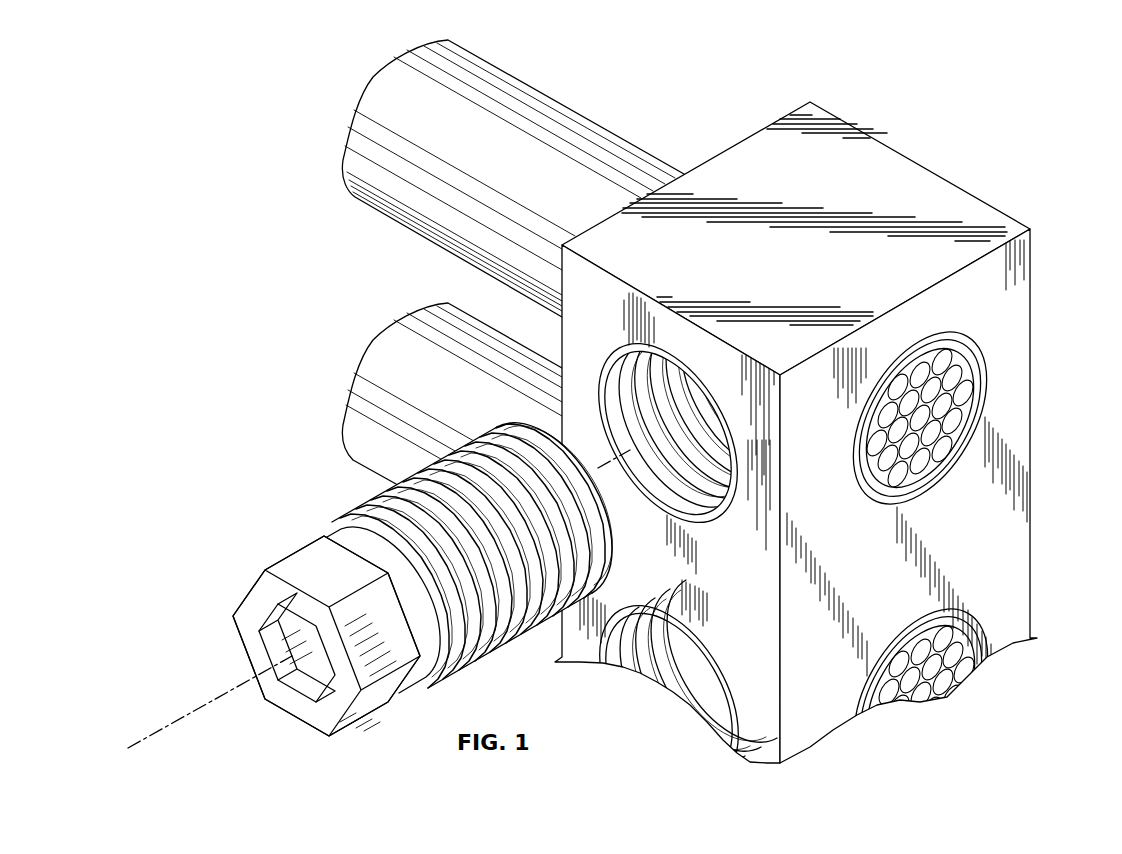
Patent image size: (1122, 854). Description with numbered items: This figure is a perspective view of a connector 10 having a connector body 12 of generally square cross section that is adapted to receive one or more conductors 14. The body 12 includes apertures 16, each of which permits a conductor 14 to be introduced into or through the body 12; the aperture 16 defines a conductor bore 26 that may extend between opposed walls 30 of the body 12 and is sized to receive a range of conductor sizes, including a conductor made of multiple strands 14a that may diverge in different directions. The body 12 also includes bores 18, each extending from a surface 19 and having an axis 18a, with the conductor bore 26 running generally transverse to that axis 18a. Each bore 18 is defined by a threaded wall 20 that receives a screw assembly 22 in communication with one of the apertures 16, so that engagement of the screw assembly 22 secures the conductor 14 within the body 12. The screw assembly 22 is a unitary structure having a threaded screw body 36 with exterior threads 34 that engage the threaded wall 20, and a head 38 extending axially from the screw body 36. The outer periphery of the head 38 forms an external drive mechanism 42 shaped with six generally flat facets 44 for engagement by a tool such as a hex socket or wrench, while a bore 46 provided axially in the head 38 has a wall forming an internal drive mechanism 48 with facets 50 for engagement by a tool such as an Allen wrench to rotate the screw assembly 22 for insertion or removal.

The connector 10 is at (929, 86).
The connector body 12 is at (829, 455).
The conductor 14 is at (568, 112).
The strands 14a is at (965, 388).
The aperture 16 is at (965, 417).
The bore 18 is at (683, 427).
The axis 18a is at (170, 726).
The surface 19 is at (605, 329).
The threaded wall 20 is at (672, 450).
The screw assembly 22 is at (381, 599).
The conductor bore 26 is at (950, 468).
The opposed walls 30 is at (815, 432).
The exterior threads 34 is at (523, 620).
The threaded screw body 36 is at (434, 684).
The head 38 is at (285, 629).
The external drive mechanism 42 is at (371, 704).
The facets 44 is at (399, 616).
The bore 46 is at (305, 660).
The internal drive mechanism 48 is at (292, 623).
The facets 50 is at (283, 644).